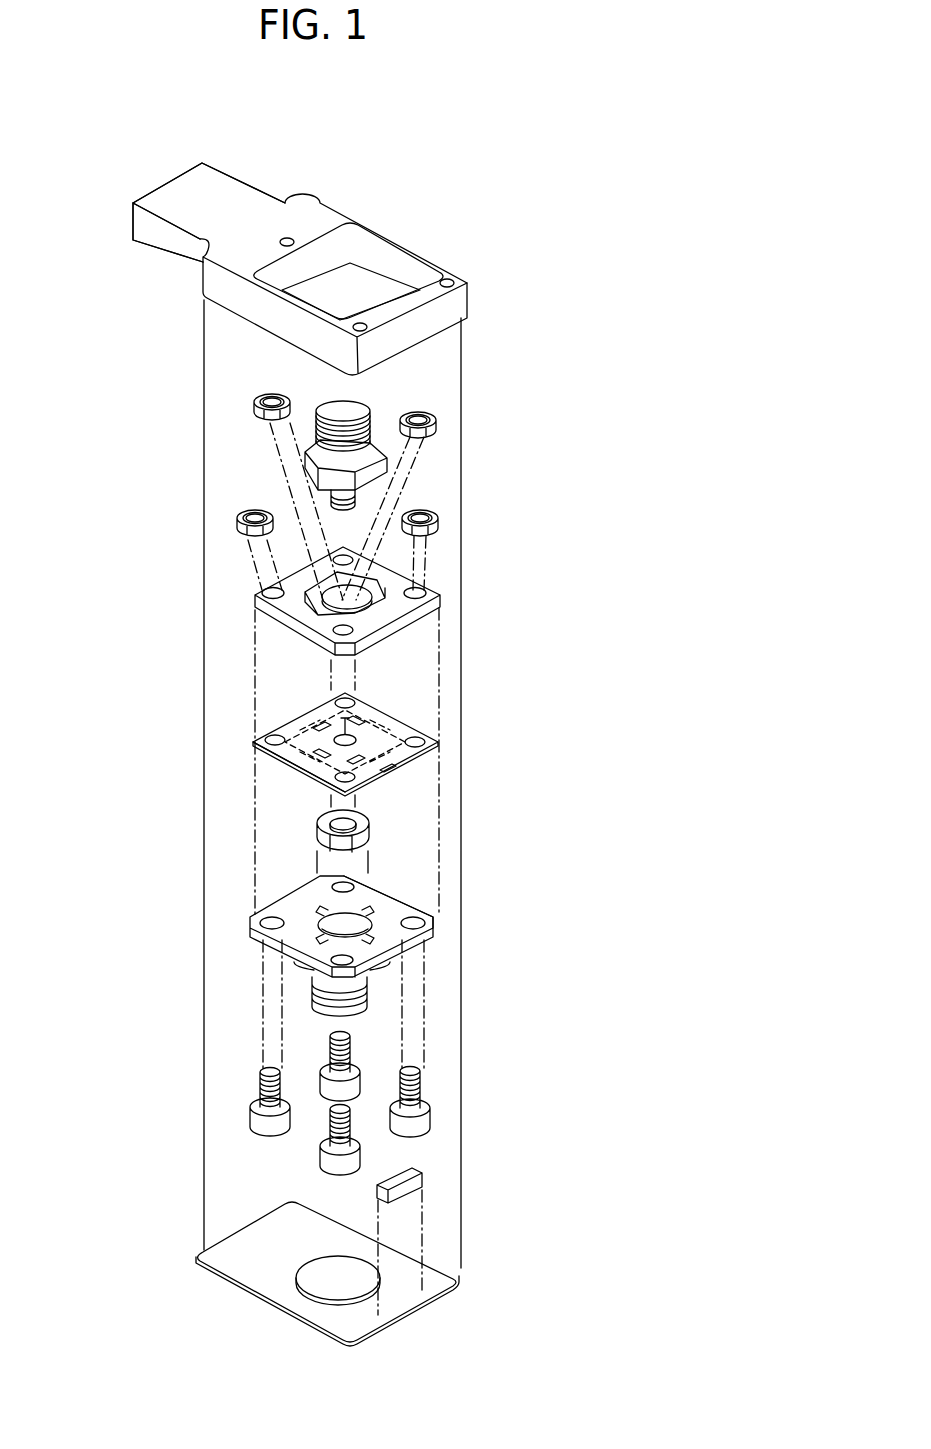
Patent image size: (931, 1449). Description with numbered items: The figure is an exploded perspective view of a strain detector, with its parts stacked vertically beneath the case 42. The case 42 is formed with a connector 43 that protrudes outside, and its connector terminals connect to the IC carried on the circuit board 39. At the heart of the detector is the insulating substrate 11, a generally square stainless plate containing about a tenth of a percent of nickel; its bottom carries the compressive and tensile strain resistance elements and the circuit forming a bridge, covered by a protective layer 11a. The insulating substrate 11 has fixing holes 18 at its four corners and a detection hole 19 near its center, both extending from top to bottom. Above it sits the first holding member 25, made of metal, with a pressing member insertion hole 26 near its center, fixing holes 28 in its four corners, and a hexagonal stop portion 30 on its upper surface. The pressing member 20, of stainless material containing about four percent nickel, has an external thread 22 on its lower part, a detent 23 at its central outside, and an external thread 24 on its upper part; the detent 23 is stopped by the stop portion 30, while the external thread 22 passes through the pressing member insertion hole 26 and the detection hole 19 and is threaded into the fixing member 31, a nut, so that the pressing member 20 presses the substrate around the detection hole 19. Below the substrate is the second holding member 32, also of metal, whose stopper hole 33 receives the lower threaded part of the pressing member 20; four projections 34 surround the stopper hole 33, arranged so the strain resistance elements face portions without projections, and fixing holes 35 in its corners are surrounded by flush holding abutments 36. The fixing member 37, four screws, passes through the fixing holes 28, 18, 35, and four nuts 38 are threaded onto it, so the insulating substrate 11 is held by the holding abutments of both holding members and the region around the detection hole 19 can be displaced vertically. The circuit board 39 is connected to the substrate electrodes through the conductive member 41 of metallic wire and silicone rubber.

The insulating substrate 11 is at (346, 725).
The protective layer 11a is at (357, 725).
The fixing holes 18 is at (255, 742).
The detection hole 19 is at (300, 752).
The pressing member 20 is at (387, 463).
The external thread 22 is at (382, 495).
The detent 23 is at (303, 463).
The external thread 24 is at (300, 430).
The first holding member 25 is at (337, 609).
The pressing member insertion hole 26 is at (317, 603).
The fixing holes 28 is at (425, 593).
The stop portion 30 is at (333, 605).
The fixing member 31 is at (368, 832).
The second holding member 32 is at (354, 932).
The stopper hole 33 is at (320, 930).
The projections 34 is at (403, 944).
The fixing holes 35 is at (403, 928).
The holding abutments 36 is at (435, 912).
The fixing member 37 is at (430, 1103).
The nuts 38 is at (430, 528).
The circuit board 39 is at (277, 1255).
The conductive member 41 is at (413, 1184).
The case 42 is at (293, 227).
The connector 43 is at (215, 193).